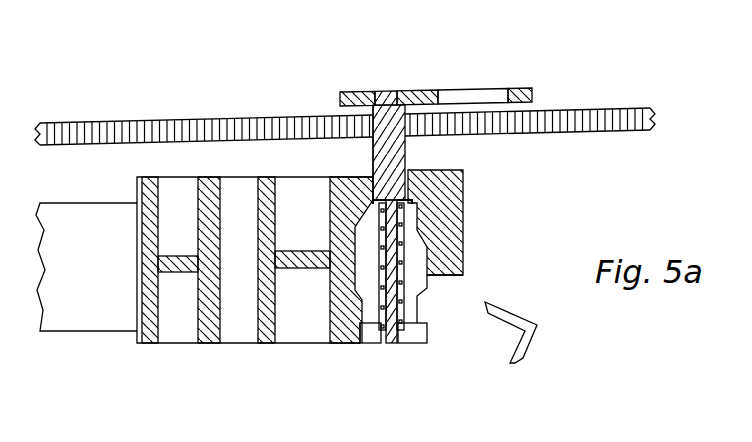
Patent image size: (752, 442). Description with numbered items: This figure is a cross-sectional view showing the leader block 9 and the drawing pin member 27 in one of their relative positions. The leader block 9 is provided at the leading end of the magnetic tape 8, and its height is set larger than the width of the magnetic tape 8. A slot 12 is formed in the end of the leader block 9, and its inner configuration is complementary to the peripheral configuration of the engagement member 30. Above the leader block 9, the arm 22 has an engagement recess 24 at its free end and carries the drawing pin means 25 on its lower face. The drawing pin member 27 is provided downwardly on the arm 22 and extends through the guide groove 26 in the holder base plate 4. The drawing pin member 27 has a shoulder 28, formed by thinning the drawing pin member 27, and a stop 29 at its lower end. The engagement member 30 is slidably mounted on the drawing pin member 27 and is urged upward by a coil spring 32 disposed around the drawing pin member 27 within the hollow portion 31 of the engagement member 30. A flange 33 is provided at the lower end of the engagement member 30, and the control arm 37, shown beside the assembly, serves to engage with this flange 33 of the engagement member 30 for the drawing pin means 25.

The holder base plate 4 is at (578, 115).
The magnetic tape 8 is at (92, 333).
The leader block 9 is at (242, 333).
The slot 12 is at (432, 263).
The arm 22 is at (418, 91).
The engagement recess 24 is at (485, 97).
The drawing pin means 25 is at (413, 240).
The guide groove 26 is at (370, 140).
The drawing pin member 27 is at (400, 160).
The shoulder 28 is at (410, 200).
The stop 29 is at (395, 343).
The engagement member 30 is at (421, 287).
The hollow portion 31 is at (382, 278).
The coil spring 32 is at (400, 303).
The flange 33 is at (372, 343).
The control arm 37 is at (537, 334).